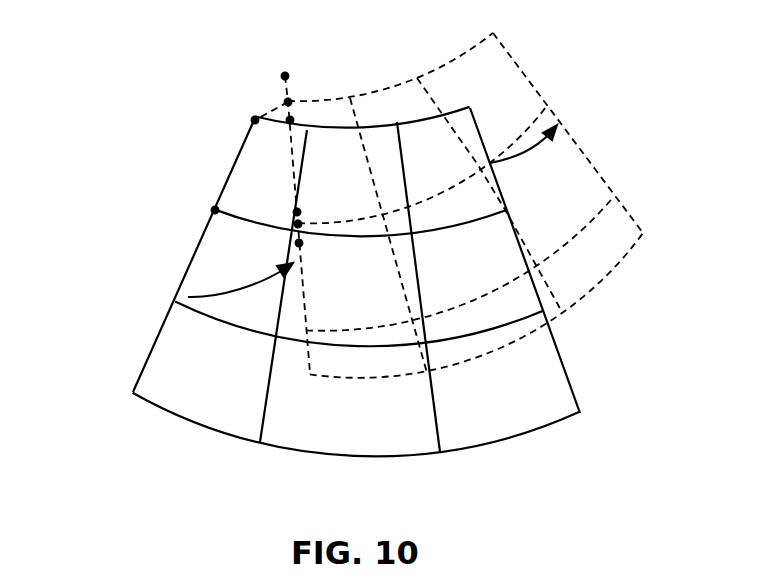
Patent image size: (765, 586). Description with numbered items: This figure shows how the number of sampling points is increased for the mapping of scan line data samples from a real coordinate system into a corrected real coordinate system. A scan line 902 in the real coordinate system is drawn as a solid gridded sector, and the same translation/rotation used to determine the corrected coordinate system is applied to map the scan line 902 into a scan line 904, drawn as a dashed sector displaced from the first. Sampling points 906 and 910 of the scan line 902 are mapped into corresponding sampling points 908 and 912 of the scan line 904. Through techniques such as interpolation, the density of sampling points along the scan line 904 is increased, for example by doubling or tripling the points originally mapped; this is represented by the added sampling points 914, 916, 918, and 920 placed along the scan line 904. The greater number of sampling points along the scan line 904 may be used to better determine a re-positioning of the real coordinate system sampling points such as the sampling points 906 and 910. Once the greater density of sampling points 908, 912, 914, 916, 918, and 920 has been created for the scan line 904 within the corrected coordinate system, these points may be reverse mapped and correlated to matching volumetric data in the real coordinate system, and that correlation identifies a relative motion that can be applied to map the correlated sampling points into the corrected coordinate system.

The scan line 902 is at (193, 259).
The scan line 904 is at (293, 170).
The sampling point 906 is at (215, 210).
The sampling point 908 is at (297, 212).
The sampling point 910 is at (255, 120).
The sampling point 912 is at (288, 102).
The sampling point 914 is at (285, 76).
The sampling point 916 is at (290, 120).
The sampling point 918 is at (295, 212).
The sampling point 920 is at (299, 243).